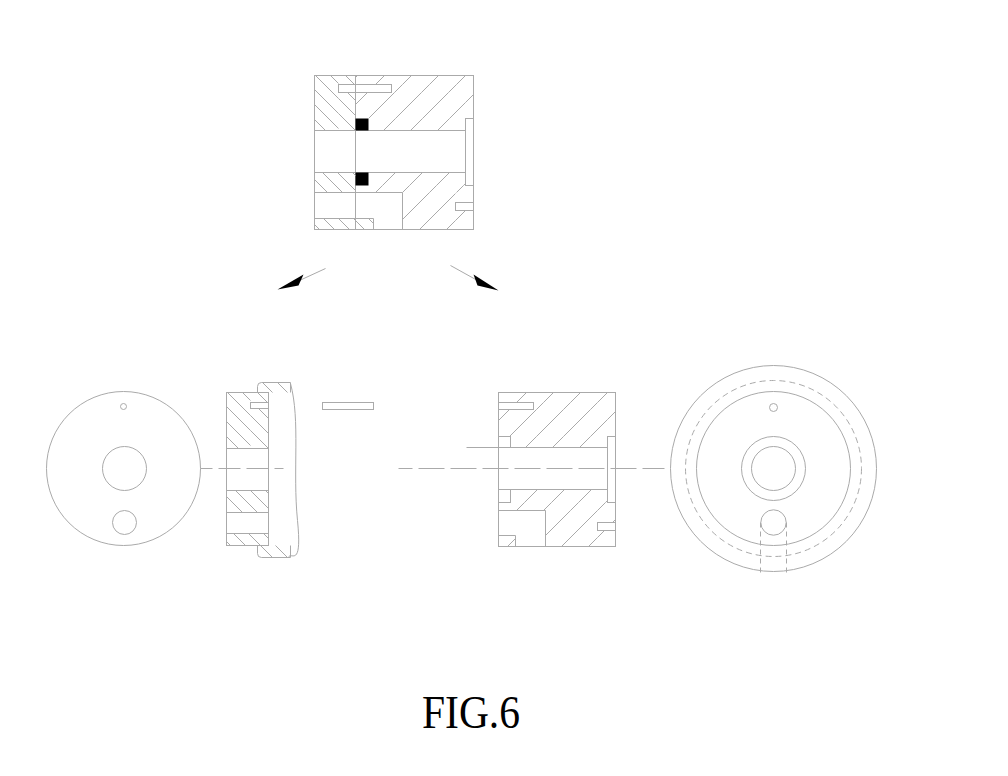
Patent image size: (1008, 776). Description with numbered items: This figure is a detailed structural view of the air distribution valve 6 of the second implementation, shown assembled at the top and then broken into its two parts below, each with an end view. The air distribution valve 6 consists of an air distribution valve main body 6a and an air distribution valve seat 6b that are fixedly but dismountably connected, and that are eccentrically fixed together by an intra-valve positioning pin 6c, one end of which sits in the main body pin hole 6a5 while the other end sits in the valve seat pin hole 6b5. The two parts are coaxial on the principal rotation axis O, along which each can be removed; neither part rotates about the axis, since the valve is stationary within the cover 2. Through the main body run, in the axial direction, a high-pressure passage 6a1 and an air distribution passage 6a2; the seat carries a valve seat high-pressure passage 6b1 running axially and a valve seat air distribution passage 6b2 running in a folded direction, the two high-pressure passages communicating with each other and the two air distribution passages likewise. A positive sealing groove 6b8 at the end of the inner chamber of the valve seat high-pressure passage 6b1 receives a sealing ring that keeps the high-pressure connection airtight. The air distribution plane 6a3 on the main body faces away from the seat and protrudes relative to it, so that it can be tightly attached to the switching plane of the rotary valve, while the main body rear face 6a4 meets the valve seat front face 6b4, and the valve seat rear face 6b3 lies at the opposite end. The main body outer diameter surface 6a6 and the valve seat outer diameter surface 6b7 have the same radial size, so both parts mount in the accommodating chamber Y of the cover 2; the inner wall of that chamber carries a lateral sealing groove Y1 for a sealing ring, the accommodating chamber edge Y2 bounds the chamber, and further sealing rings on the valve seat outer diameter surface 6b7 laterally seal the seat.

The air distribution valve 6 is at (262, 141).
The air distribution valve main body 6a is at (338, 107).
The air distribution valve seat 6b is at (465, 85).
The intra-valve positioning pin 6c is at (358, 86).
The high-pressure passage 6a1 is at (232, 458).
The air distribution passage 6a2 is at (233, 522).
The air distribution plane 6a3 is at (227, 540).
The main body rear face 6a4 is at (260, 440).
The main body pin hole 6a5 is at (121, 405).
The main body outer diameter surface 6a6 is at (110, 545).
The valve seat high-pressure passage 6b1 is at (771, 460).
The valve seat air distribution passage 6b2 is at (530, 528).
The valve seat rear face 6b3 is at (615, 515).
The valve seat front face 6b4 is at (498, 433).
The valve seat pin hole 6b5 is at (510, 405).
The valve seat outer diameter surface 6b7 is at (506, 546).
The positive sealing groove 6b8 is at (505, 440).
The principal rotation axis O is at (350, 473).
The accommodating chamber Y is at (280, 516).
The lateral sealing groove Y1 is at (268, 550).
The accommodating chamber edge Y2 is at (275, 540).
The cover 2 is at (288, 548).